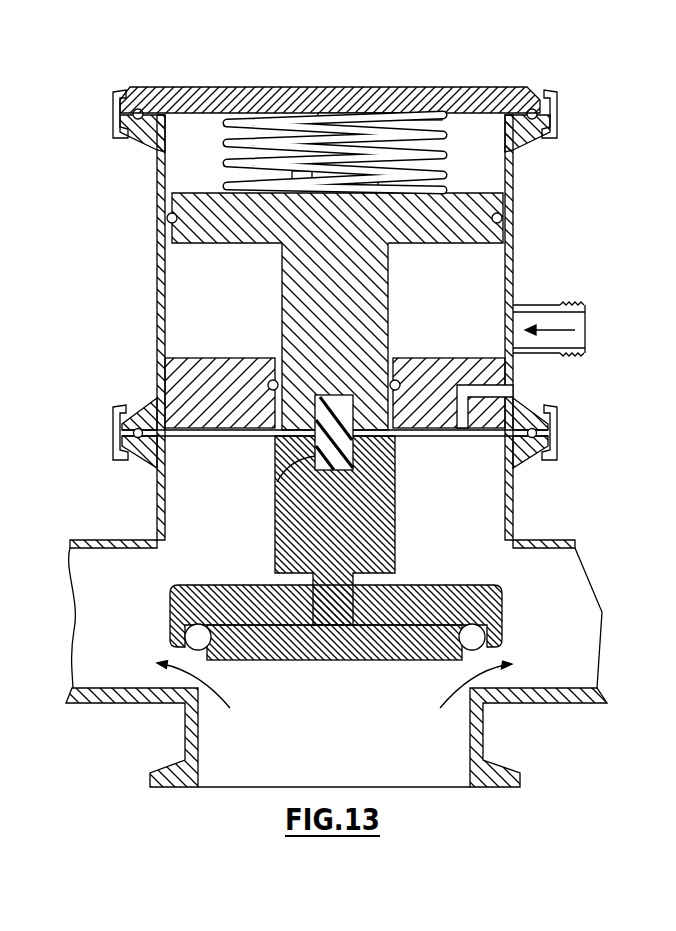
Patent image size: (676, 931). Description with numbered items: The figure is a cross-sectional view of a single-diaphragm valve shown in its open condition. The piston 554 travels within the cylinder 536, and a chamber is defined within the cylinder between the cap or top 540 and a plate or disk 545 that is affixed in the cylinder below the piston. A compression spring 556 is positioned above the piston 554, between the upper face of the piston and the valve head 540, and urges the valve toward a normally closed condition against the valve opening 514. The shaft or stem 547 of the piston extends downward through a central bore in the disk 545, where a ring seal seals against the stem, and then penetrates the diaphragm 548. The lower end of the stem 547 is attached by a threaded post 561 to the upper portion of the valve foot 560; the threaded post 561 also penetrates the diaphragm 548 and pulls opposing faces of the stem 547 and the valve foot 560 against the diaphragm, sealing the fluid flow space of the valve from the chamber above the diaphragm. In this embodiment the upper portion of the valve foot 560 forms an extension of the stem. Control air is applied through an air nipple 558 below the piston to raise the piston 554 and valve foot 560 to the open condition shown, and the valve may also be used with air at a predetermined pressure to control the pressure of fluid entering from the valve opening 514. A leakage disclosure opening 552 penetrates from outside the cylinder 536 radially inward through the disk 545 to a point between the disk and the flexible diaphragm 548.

The valve opening 514 is at (243, 787).
The cylinder 536 is at (138, 327).
The cap or top 540 is at (204, 87).
The plate or disk 545 is at (172, 397).
The shaft or stem 547 is at (281, 340).
The diaphragm 548 is at (242, 438).
The leakage disclosure opening 552 is at (513, 393).
The piston 554 is at (467, 200).
The compression spring 556 is at (415, 128).
The air nipple 558 is at (585, 318).
The valve foot 560 is at (424, 581).
The threaded post 561 is at (276, 520).